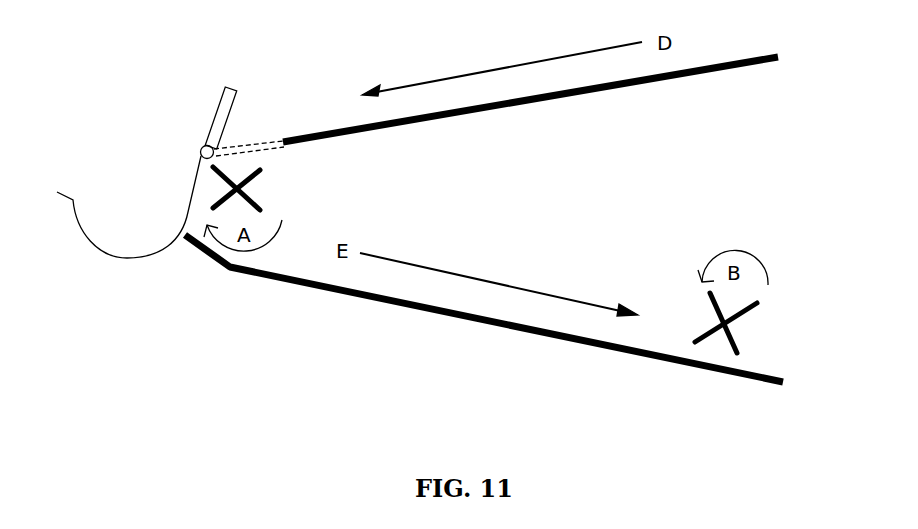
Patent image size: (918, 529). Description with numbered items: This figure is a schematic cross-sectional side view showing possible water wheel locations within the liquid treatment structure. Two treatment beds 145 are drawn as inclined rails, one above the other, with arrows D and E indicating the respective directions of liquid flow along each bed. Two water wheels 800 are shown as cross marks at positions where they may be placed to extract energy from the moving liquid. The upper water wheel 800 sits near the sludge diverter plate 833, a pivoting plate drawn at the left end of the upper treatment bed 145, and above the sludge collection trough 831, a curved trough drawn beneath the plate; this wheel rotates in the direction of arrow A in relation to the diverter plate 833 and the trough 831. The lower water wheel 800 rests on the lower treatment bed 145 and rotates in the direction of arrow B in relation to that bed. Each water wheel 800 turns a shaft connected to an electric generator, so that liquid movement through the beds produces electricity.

The treatment bed 145 is at (547, 103).
The water wheel 800 is at (245, 190).
The sludge collection trough 831 is at (95, 247).
The sludge diverter plate 833 is at (213, 128).